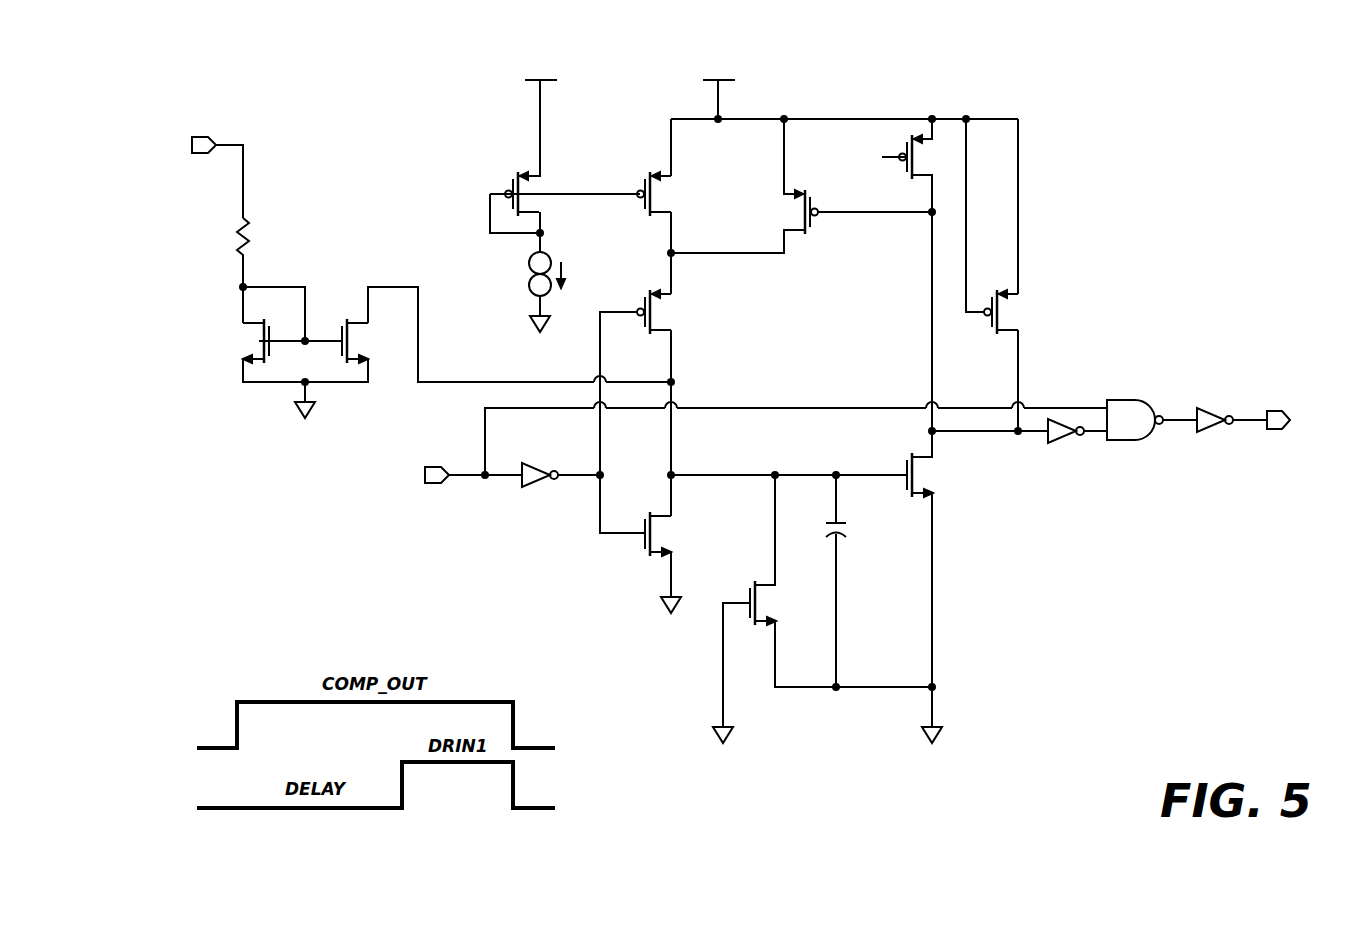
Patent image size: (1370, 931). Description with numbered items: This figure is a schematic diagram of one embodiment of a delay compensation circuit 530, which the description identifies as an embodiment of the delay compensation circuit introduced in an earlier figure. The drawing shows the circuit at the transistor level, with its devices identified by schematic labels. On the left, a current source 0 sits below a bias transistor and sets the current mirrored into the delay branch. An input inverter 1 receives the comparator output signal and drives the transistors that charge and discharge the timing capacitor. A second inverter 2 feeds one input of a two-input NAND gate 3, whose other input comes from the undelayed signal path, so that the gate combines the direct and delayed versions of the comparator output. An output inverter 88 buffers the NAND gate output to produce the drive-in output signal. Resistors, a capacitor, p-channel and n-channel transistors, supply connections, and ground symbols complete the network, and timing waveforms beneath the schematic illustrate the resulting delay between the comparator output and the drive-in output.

The delay compensation circuit 530 is at (1210, 120).
The current source I0 0 is at (560, 274).
The inverter I1 1 is at (540, 486).
The inverter I2 2 is at (1066, 443).
The NAND gate I3 3 is at (1135, 434).
The inverter I88 88 is at (1215, 432).